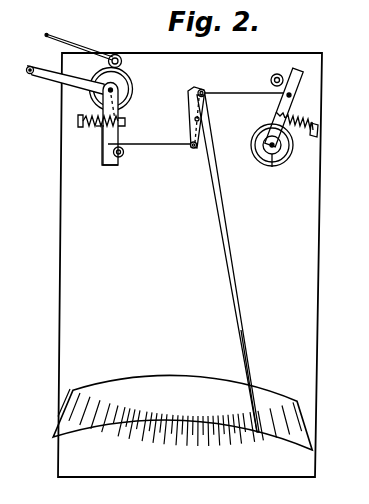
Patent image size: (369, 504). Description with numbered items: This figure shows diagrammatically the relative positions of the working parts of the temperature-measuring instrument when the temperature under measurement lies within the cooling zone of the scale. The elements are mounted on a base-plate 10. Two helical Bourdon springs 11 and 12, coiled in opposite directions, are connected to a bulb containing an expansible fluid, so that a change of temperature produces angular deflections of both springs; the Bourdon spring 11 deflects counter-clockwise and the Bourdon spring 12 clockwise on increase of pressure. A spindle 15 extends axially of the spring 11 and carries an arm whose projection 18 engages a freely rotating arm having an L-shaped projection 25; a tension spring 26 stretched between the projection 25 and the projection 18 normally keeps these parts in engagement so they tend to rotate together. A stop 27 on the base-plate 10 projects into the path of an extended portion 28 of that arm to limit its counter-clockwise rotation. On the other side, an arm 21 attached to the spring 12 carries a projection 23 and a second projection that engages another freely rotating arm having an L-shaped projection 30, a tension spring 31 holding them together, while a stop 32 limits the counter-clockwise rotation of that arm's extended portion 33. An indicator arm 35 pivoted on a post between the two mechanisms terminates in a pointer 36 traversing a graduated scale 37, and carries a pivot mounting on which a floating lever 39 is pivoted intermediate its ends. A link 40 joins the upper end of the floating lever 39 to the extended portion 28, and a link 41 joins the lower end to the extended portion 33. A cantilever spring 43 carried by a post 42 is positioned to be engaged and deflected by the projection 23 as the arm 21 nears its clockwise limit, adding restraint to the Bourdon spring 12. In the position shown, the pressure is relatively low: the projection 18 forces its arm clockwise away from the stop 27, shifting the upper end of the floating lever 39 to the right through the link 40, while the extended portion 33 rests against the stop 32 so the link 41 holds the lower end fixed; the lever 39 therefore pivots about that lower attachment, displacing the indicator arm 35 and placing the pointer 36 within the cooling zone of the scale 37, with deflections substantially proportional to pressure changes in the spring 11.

The base-plate 10 is at (311, 253).
The helical Bourdon spring 11 is at (291, 147).
The helical Bourdon spring 12 is at (131, 86).
The spindle 15 is at (274, 158).
The projection 18 is at (277, 114).
The arm 21 is at (125, 110).
The projection 23 is at (30, 75).
The L-shaped projection 25 is at (318, 131).
The tension spring 26 is at (297, 123).
The stop 27 is at (277, 74).
The extended portion 28 is at (300, 71).
The L-shaped projection 30 is at (78, 122).
The tension spring 31 is at (100, 128).
The stop 32 is at (125, 151).
The extended portion 33 is at (110, 164).
The indicator arm 35 is at (216, 187).
The pointer 36 is at (250, 371).
The graduated scale 37 is at (185, 421).
The floating lever 39 is at (188, 133).
The link 40 is at (242, 94).
The link 41 is at (148, 143).
The post 42 is at (120, 56).
The cantilever spring 43 is at (82, 48).